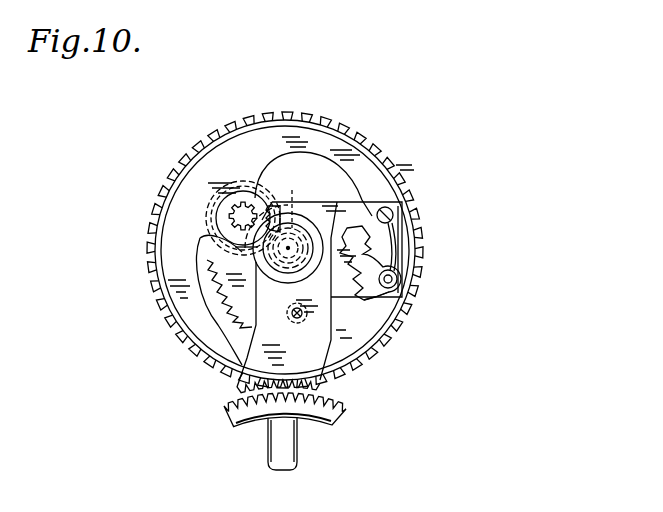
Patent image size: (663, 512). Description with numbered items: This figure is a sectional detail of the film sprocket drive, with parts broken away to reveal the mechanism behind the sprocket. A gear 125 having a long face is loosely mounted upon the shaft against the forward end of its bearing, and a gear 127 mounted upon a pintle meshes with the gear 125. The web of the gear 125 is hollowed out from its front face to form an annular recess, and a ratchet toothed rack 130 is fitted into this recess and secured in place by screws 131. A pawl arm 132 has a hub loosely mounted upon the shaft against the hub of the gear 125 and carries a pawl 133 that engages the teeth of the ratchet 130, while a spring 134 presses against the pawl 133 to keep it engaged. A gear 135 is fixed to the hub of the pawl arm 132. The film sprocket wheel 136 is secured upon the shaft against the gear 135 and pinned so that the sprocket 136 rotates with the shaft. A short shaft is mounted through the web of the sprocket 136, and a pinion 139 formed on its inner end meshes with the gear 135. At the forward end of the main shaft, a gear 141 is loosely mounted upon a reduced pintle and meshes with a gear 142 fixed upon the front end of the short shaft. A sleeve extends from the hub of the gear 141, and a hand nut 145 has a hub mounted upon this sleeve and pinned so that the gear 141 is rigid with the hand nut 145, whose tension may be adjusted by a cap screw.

The gear 125 is at (318, 360).
The gear 127 is at (328, 414).
The ratchet toothed rack 130 is at (353, 240).
The screws 131 is at (296, 323).
The pawl arm 132 is at (372, 299).
The pawl 133 is at (398, 278).
The spring 134 is at (395, 240).
The gear 135 is at (315, 190).
The film sprocket wheel 136 is at (378, 151).
The pinion 139 is at (208, 222).
The gear 141 is at (288, 274).
The gear 142 is at (210, 210).
The hand nut 145 is at (272, 266).